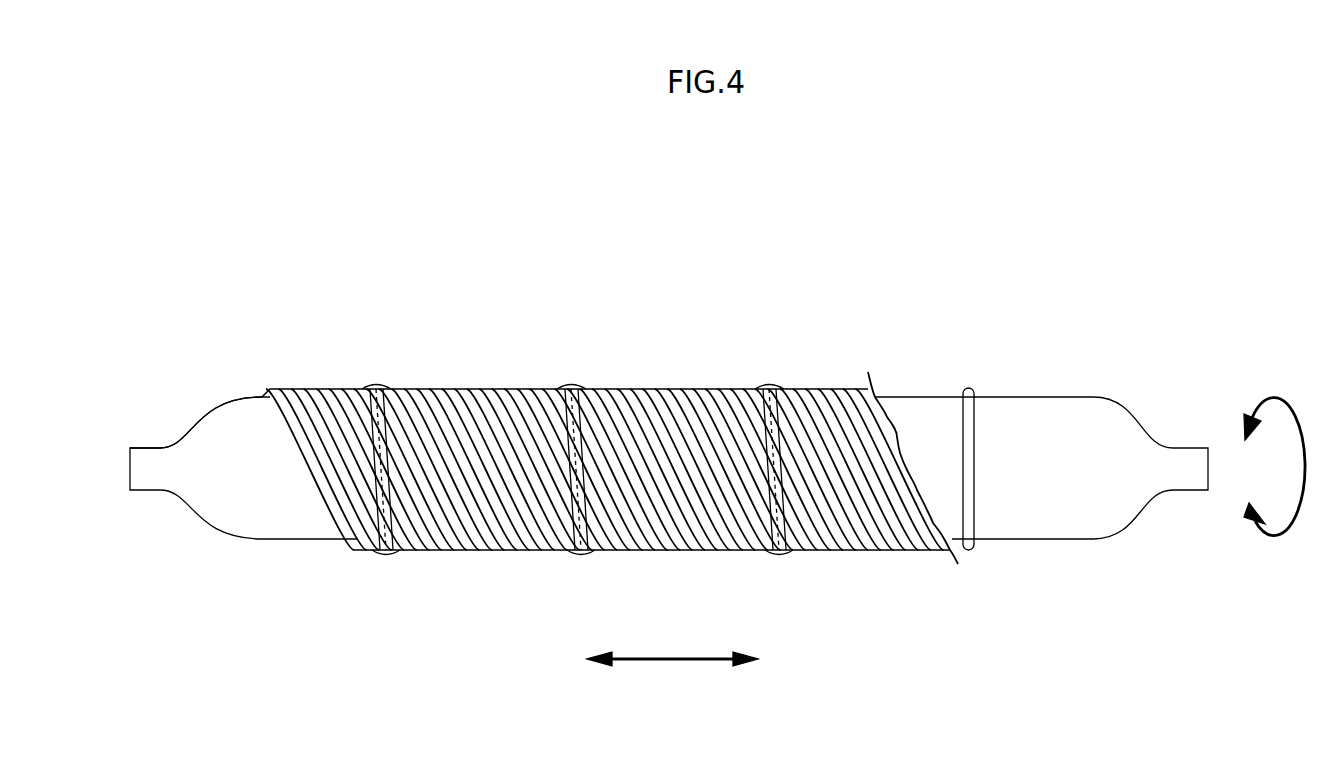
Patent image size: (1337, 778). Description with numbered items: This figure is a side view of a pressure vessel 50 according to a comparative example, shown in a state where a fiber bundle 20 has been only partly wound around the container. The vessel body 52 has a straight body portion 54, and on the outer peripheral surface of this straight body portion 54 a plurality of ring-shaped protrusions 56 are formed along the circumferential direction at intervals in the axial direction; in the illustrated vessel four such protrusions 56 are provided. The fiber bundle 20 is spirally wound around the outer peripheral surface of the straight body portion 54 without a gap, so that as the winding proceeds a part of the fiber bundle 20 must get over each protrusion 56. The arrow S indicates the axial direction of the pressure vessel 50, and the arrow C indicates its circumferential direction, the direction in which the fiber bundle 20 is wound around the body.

The fiber bundle 20 is at (267, 388).
The pressure vessel 50 is at (937, 259).
The vessel body 52 is at (1007, 396).
The straight body portion 54 is at (657, 389).
The ring-shaped protrusion 56 is at (380, 387).
The arrow C is at (1275, 397).
The arrow S is at (667, 661).